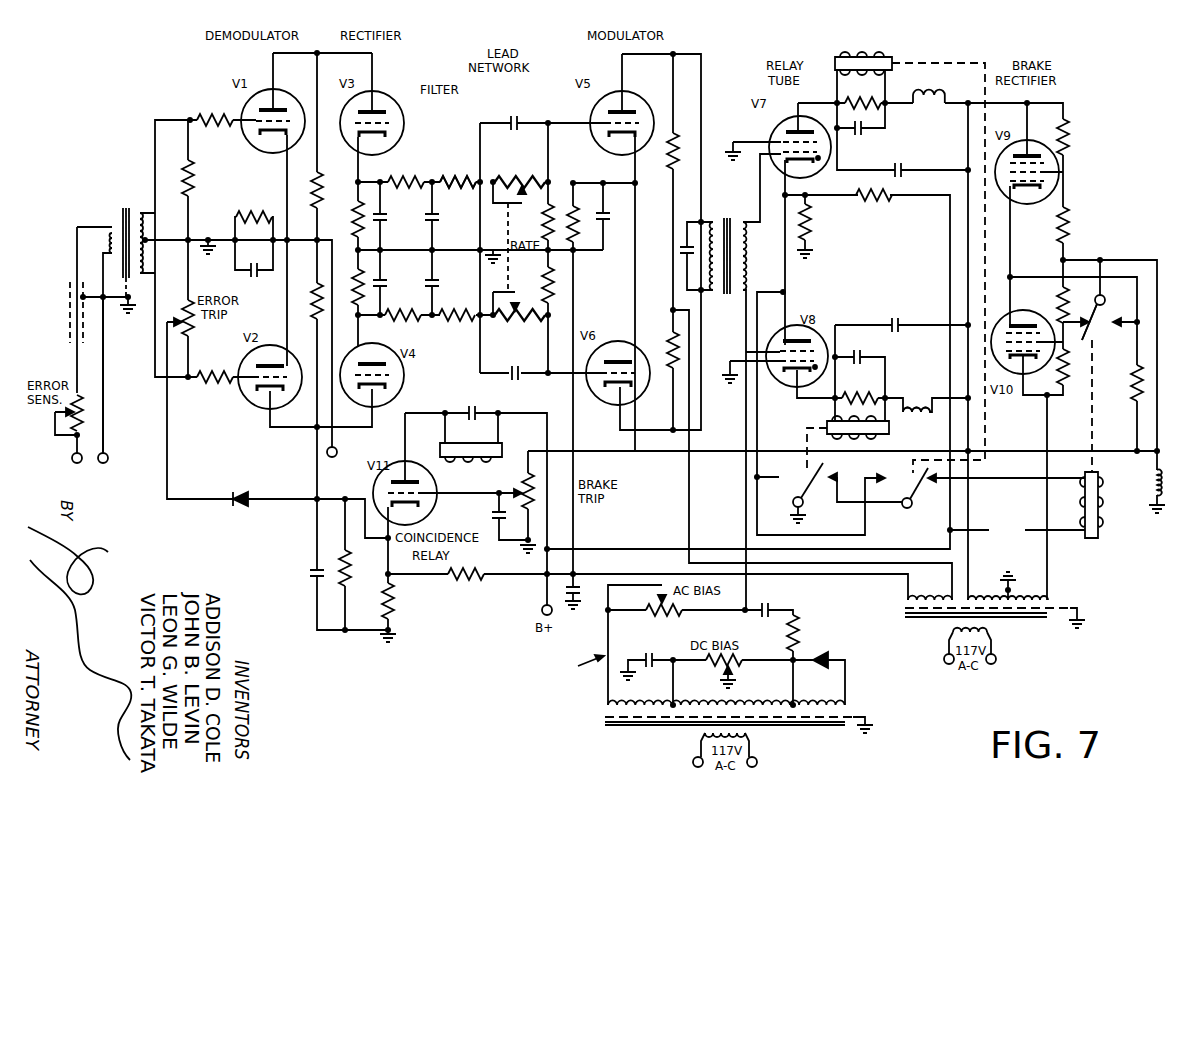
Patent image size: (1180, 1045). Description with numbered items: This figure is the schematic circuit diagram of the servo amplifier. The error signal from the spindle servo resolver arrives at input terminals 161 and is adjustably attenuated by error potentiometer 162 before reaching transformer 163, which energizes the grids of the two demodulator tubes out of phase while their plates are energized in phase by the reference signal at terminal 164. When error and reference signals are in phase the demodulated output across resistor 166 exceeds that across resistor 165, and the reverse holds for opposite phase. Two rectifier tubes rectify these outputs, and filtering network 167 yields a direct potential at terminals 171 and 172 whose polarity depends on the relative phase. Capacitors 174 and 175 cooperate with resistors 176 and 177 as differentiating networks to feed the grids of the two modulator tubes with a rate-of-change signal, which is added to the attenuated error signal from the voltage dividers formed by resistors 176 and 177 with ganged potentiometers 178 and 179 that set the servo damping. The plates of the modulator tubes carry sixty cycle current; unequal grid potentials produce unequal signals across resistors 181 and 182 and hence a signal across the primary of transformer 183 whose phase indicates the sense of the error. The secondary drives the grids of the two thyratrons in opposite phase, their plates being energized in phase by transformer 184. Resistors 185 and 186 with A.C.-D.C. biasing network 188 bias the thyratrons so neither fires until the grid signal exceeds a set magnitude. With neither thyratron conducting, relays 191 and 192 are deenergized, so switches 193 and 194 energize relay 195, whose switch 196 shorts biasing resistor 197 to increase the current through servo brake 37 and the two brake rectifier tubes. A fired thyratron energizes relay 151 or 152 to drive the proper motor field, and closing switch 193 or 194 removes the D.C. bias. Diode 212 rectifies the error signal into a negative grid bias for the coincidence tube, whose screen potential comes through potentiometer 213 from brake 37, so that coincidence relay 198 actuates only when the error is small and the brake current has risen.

The servo brake 37 is at (1150, 488).
The relay 151 is at (937, 112).
The relay 152 is at (918, 398).
The input terminals 161 is at (104, 481).
The error potentiometer 162 is at (70, 443).
The transformer 163 is at (108, 215).
The terminal 164 is at (327, 453).
The resistor 165 is at (312, 287).
The resistor 166 is at (326, 205).
The filtering network 167 is at (462, 345).
The terminal 171 is at (476, 172).
The terminal 172 is at (478, 306).
The capacitor 174 is at (516, 116).
The capacitor 175 is at (508, 377).
The resistor 176 is at (544, 224).
The resistor 177 is at (542, 286).
The potentiometer 178 is at (514, 176).
The potentiometer 179 is at (510, 324).
The resistor 181 is at (668, 162).
The resistor 182 is at (666, 340).
The transformer 183 is at (739, 206).
The transformer 184 is at (1004, 624).
The resistor 185 is at (812, 241).
The resistor 186 is at (872, 206).
The A.C.-D.C. biasing network 188 is at (709, 716).
The relay 191 is at (854, 50).
The relay 192 is at (822, 421).
The switch 193 is at (902, 509).
The switch 194 is at (804, 510).
The relay 195 is at (1102, 506).
The switch 196 is at (1094, 335).
The biasing resistor 197 is at (1126, 392).
The coincidence relay 198 is at (502, 443).
The diode 212 is at (242, 512).
The potentiometer 213 is at (518, 483).